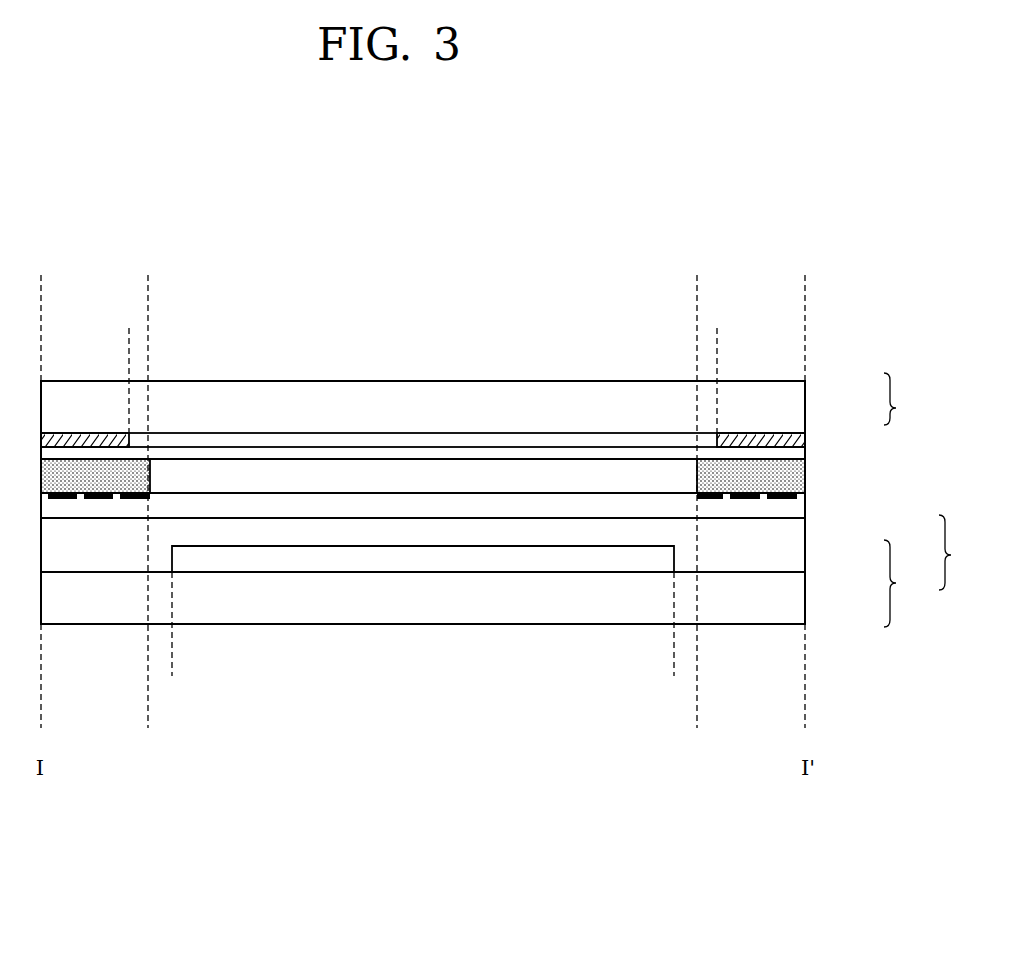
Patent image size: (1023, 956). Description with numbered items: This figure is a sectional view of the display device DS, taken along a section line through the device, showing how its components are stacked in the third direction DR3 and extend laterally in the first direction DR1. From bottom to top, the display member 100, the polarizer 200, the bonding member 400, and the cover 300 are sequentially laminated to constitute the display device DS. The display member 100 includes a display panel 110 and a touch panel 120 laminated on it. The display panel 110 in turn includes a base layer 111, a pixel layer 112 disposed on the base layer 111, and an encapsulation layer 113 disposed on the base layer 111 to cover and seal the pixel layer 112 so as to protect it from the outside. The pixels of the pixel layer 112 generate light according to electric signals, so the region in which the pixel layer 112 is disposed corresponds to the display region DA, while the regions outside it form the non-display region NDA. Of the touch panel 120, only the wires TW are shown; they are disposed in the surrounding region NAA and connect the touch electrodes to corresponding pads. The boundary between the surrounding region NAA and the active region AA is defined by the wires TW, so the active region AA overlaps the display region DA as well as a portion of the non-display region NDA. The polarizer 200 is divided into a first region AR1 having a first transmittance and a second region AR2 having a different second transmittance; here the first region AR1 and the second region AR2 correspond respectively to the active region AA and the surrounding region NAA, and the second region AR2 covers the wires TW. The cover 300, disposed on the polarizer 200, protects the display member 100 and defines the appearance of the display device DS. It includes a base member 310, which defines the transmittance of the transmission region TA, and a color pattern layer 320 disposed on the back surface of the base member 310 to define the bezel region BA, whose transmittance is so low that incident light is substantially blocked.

The display device DS is at (722, 208).
The display member 100 is at (966, 552).
The display panel 110 is at (911, 583).
The base layer 111 is at (798, 612).
The pixel layer 112 is at (663, 559).
The encapsulation layer 113 is at (798, 548).
The touch panel 120 is at (798, 505).
The polarizer 200 is at (798, 468).
The cover 300 is at (911, 399).
The base member 310 is at (798, 407).
The color pattern layer 320 is at (798, 440).
The bonding member 400 is at (798, 452).
The wires TW is at (798, 480).
The first region AR1 is at (697, 284).
The second region AR2 is at (41, 284).
The bezel region BA is at (41, 337).
The transmission region TA is at (129, 337).
The display region DA is at (172, 668).
The non-display region NDA is at (172, 668).
The active region AA is at (148, 722).
The surrounding region NAA is at (41, 722).
The first direction DR1 is at (888, 825).
The third direction DR3 is at (888, 825).